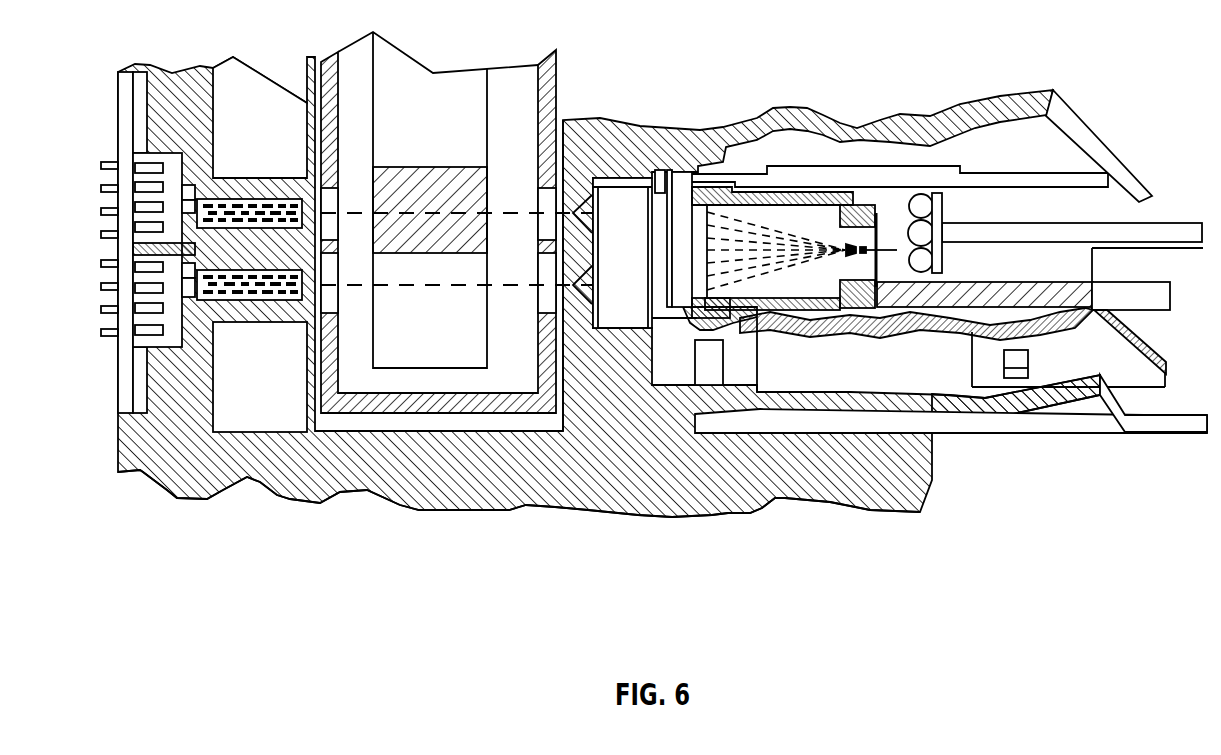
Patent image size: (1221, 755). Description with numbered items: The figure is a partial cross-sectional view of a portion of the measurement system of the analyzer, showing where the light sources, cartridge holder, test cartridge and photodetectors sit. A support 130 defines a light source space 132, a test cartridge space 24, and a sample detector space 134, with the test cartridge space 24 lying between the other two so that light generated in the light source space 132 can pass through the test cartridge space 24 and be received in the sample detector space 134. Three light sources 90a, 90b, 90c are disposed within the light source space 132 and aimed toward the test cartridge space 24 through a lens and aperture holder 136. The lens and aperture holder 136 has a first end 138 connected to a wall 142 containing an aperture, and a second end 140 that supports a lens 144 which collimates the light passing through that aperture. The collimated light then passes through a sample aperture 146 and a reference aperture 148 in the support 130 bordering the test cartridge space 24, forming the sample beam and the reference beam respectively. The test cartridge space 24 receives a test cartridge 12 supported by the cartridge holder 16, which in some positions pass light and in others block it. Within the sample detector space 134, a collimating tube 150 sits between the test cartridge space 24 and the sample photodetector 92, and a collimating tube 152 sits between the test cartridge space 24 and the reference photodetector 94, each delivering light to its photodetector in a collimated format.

The test cartridge 12 is at (375, 52).
The cartridge holder 16 is at (336, 57).
The test cartridge space 24 is at (390, 440).
The sample photodetector 92 is at (110, 164).
The reference photodetector 94 is at (110, 336).
The support 130 is at (907, 513).
The light source space 132 is at (1045, 205).
The sample detector space 134 is at (208, 322).
The lens and aperture holder 136 is at (787, 192).
The first end 138 is at (873, 205).
The second end 140 is at (695, 166).
The wall 142 is at (870, 300).
The lens 144 is at (660, 250).
The sample aperture 146 is at (567, 213).
The reference aperture 148 is at (578, 290).
The collimating tube 150 is at (232, 199).
The collimating tube 152 is at (263, 301).
The light source 90a is at (926, 200).
The light source 90b is at (923, 238).
The light source 90c is at (922, 272).